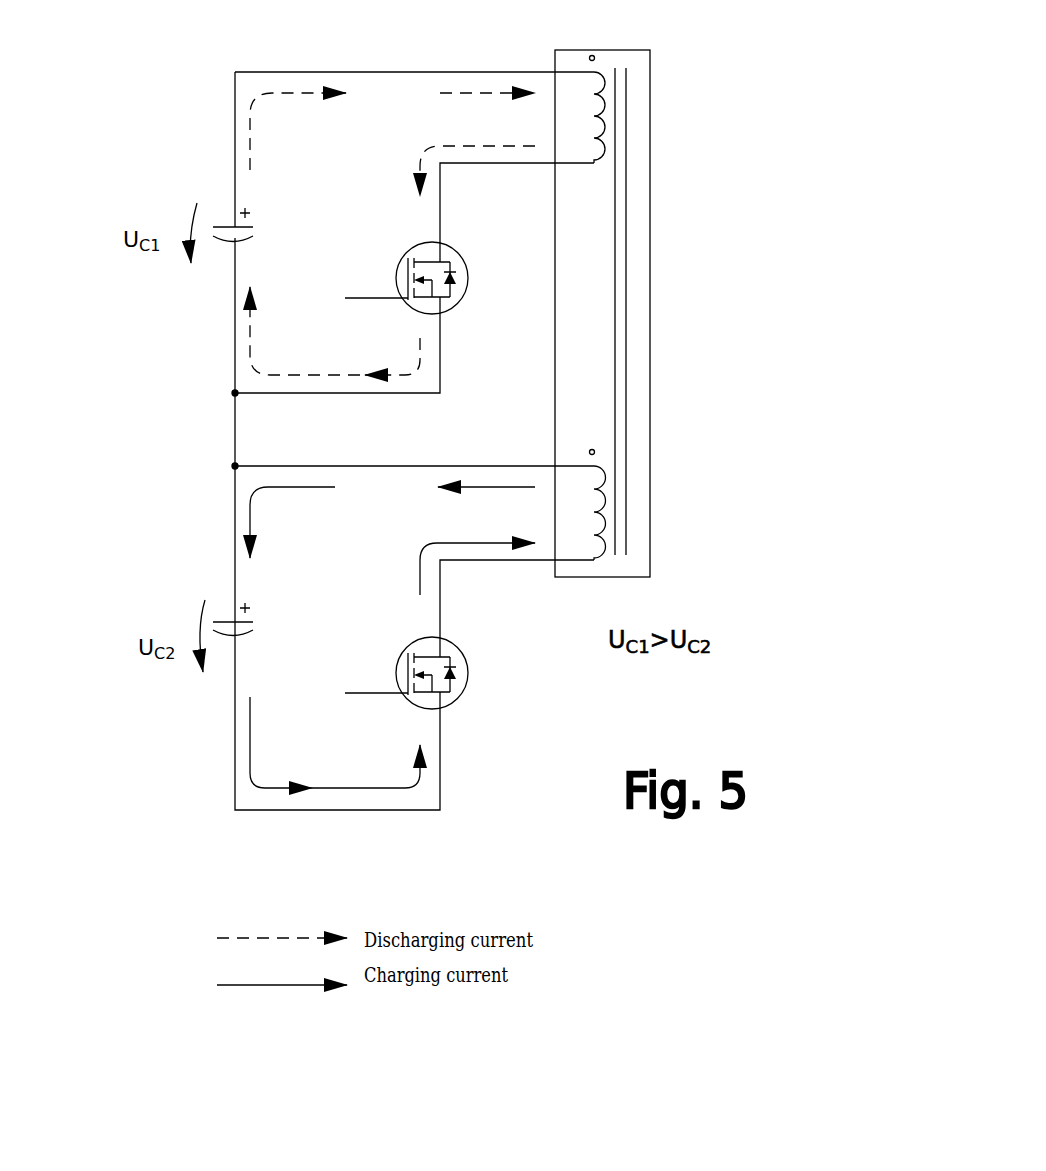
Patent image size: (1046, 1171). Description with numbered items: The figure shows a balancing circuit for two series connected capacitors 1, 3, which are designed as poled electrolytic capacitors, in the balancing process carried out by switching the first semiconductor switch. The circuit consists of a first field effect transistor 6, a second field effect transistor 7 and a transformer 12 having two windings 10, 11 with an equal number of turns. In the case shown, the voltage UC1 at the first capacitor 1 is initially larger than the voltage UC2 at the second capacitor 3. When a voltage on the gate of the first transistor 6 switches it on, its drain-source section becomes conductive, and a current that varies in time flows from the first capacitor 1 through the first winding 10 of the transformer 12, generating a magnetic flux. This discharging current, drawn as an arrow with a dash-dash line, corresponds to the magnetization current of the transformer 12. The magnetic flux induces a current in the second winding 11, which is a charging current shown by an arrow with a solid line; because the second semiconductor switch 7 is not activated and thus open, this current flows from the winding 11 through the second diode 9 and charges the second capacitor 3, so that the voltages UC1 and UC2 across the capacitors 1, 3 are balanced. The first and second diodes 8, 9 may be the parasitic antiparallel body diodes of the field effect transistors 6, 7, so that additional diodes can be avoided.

The first capacitor 1 is at (230, 225).
The second capacitor 3 is at (230, 618).
The first field effect transistor 6 is at (429, 290).
The second field effect transistor 7 is at (434, 685).
The first diode 8 is at (456, 288).
The second diode 9 is at (456, 683).
The first winding 10 is at (597, 105).
The second winding 11 is at (598, 528).
The transformer 12 is at (640, 312).